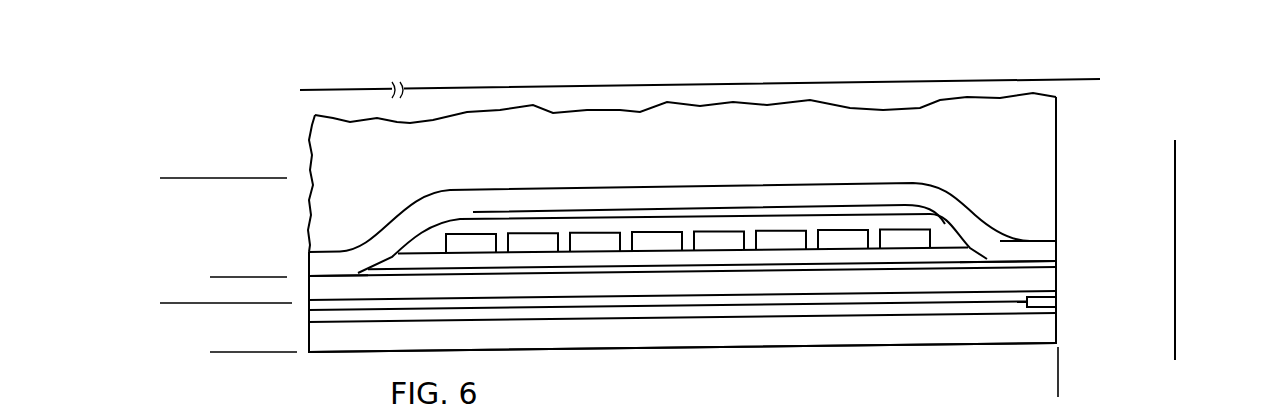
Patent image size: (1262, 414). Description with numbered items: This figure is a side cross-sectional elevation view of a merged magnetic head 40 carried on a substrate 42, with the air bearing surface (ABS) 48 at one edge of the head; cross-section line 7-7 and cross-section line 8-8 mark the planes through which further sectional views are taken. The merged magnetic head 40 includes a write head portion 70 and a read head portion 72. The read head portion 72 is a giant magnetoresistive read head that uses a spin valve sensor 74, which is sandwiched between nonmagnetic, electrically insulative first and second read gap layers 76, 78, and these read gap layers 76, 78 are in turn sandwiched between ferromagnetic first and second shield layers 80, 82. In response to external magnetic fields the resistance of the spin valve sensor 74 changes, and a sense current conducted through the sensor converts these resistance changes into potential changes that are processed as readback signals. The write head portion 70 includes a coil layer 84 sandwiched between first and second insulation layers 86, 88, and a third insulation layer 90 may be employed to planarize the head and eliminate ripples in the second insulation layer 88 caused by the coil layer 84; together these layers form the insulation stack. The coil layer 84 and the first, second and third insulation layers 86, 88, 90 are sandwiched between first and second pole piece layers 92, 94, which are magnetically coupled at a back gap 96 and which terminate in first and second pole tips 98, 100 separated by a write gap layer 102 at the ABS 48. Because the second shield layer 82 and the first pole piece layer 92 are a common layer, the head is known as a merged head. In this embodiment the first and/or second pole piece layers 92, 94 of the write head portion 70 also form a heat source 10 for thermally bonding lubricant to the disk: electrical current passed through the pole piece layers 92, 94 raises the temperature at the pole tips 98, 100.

The cross-section line 7- 7 is at (1178, 338).
The cross-section line 8- 8 is at (316, 88).
The heat source 10 is at (1076, 214).
The merged magnetic head 40 is at (282, 130).
The substrate 42 is at (1040, 124).
The air bearing surface (ABS) 48 is at (1058, 358).
The write head portion 70 is at (243, 265).
The read head portion 72 is at (243, 365).
The spin valve sensor 74 is at (1057, 303).
The first read gap layer 76 is at (743, 318).
The second read gap layer 78 is at (707, 292).
The first shield layer 80 is at (827, 328).
The second shield layer 82 is at (682, 329).
The first pole piece layer 92 is at (915, 280).
The coil layer 84 is at (720, 238).
The first insulation layer 86 is at (643, 258).
The second insulation layer 88 is at (942, 240).
The third insulation layer 90 is at (470, 219).
The second pole piece layer 94 is at (825, 187).
The back gap 96 is at (333, 274).
The first pole tip 98 is at (1057, 281).
The second pole tip 100 is at (1048, 249).
The write gap layer 102 is at (1057, 262).